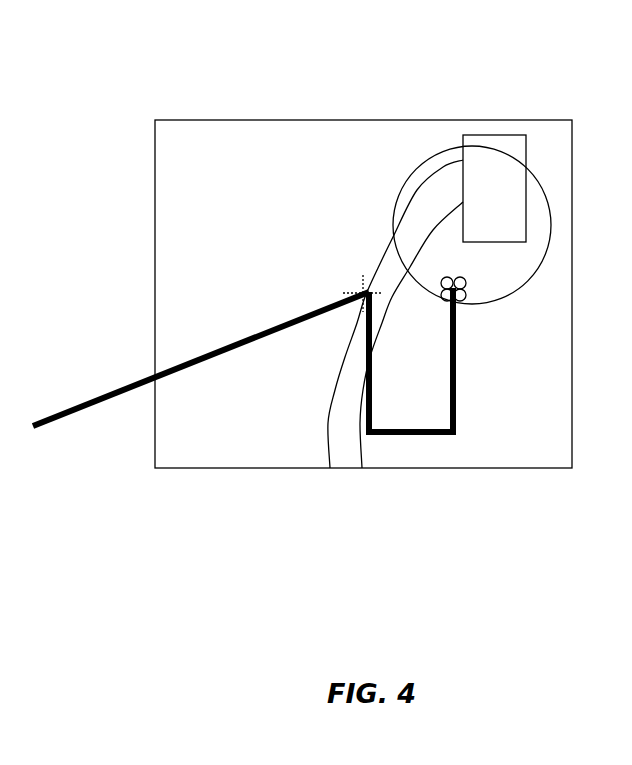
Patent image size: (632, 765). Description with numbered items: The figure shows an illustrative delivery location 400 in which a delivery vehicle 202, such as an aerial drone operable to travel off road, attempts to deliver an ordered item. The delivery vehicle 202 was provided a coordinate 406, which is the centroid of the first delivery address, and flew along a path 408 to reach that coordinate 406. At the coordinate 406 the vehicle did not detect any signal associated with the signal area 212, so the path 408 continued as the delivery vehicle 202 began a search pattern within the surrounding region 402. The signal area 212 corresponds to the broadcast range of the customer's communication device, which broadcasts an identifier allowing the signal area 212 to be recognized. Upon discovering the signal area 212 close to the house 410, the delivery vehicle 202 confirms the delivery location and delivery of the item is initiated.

The delivery location 400 is at (569, 47).
The housing 402 is at (363, 269).
The signal area 212 is at (512, 216).
The house 410 is at (512, 203).
The delivery vehicle 202 is at (498, 312).
The coordinate 406 is at (334, 269).
The path 408 is at (201, 359).